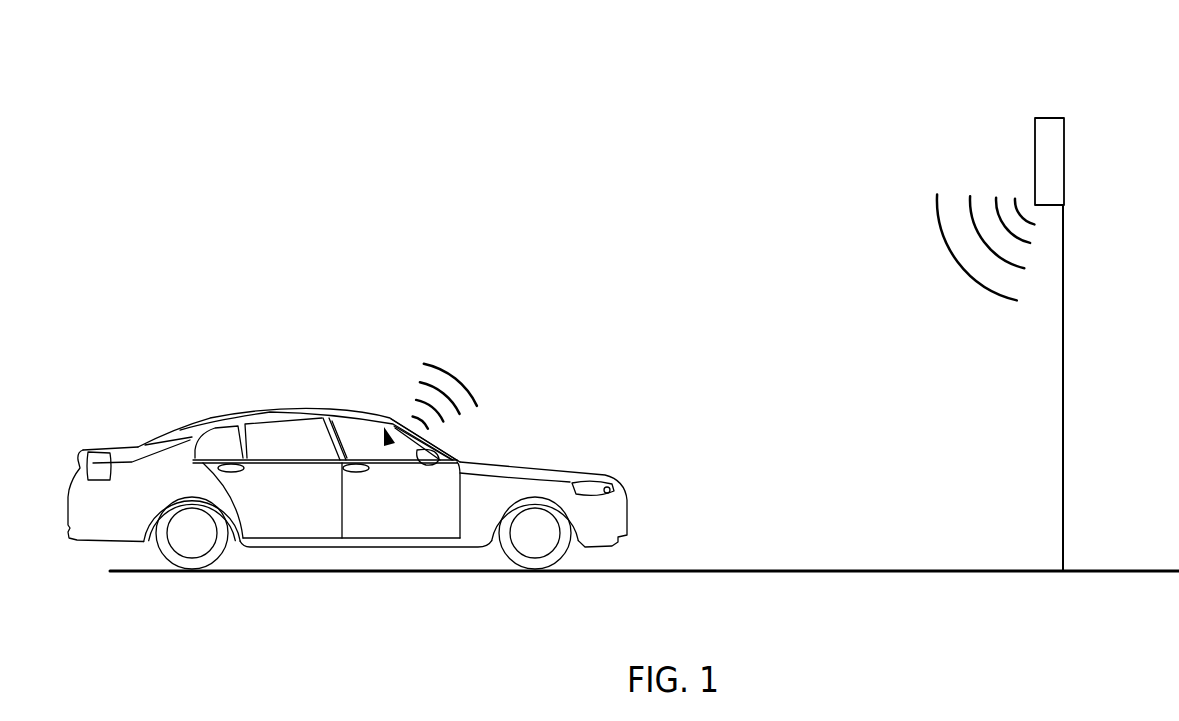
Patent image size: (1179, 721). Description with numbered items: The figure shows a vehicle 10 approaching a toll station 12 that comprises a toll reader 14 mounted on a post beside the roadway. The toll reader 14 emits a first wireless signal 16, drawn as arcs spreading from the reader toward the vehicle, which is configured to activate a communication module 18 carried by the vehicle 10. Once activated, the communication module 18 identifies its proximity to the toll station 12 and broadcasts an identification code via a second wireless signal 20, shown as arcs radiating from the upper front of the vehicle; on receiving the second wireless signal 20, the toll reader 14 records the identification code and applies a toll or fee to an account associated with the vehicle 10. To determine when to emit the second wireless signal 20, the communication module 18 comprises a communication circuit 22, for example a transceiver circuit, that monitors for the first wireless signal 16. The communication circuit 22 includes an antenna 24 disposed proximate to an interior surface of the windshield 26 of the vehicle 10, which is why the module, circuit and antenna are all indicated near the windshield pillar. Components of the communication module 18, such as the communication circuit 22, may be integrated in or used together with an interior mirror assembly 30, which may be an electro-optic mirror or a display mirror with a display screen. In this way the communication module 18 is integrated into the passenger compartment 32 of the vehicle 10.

The vehicle 10 is at (170, 403).
The toll station 12 is at (1017, 101).
The toll reader 14 is at (1065, 162).
The first wireless signal 16 is at (913, 194).
The communication module 18 is at (386, 421).
The second wireless signal 20 is at (478, 389).
The communication circuit 22 is at (417, 444).
The antenna 24 is at (399, 425).
The windshield 26 is at (452, 453).
The interior mirror assembly 30 is at (393, 447).
The passenger compartment 32 is at (379, 452).